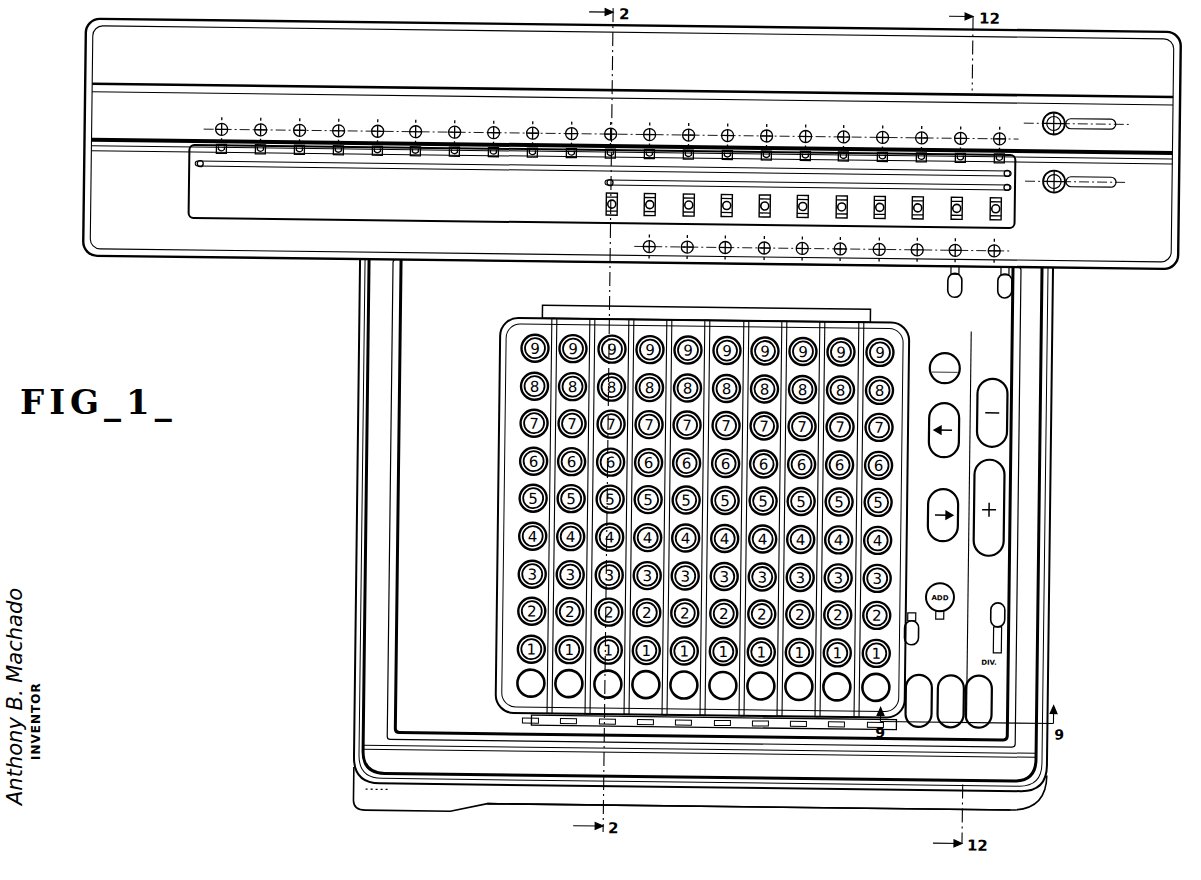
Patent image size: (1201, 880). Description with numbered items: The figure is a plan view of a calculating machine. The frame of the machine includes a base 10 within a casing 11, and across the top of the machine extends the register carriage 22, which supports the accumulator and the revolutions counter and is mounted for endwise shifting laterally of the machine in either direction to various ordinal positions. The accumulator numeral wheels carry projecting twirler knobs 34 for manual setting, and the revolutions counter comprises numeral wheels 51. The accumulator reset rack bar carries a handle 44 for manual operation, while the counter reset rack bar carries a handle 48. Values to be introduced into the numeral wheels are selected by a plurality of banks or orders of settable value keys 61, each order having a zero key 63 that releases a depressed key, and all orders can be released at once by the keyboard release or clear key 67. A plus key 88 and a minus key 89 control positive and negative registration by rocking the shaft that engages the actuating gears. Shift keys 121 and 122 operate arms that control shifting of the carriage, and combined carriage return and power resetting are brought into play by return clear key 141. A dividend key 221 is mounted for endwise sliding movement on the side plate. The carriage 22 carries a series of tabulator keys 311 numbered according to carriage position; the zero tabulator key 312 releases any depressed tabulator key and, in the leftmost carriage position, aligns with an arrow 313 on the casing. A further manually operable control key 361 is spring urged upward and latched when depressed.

The base 10 is at (748, 807).
The casing 11 is at (412, 600).
The register carriage 22 is at (305, 262).
The twirler knobs 34 is at (762, 128).
The handle 44 is at (1046, 106).
The handle 48 is at (1060, 184).
The numeral wheels 51 is at (603, 204).
The value keys 61 is at (521, 430).
The zero key 63 is at (520, 685).
The keyboard release or clear key 67 is at (920, 680).
The plus key 88 is at (994, 484).
The minus key 89 is at (1000, 434).
The shift key 121 is at (942, 406).
The shift key 122 is at (936, 492).
The return clear key 141 is at (941, 724).
The dividend key 221 is at (940, 360).
The tabulator keys 311 is at (760, 254).
The zero tabulator key 312 is at (998, 246).
The arrow 313 is at (878, 266).
The key 361 is at (975, 724).